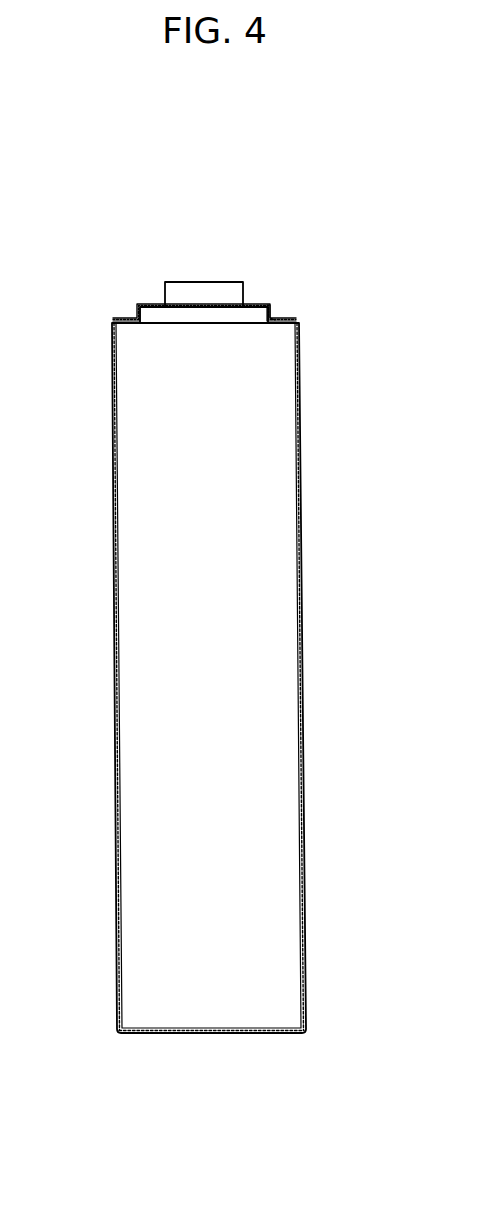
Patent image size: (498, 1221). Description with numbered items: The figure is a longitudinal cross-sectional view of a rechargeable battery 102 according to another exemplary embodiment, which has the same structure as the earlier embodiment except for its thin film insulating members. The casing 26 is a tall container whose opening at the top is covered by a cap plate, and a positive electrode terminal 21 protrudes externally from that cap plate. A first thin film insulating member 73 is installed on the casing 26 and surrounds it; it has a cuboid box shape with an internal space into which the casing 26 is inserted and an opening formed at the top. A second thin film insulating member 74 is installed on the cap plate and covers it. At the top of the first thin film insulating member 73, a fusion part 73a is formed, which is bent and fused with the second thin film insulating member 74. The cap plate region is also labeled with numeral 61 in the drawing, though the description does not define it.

The rechargeable battery 102 is at (222, 184).
The positive electrode terminal 21 is at (202, 292).
The cap plate 61 is at (158, 318).
The first thin film insulating member 73 is at (297, 462).
The fusion part 73a is at (287, 313).
The second thin film insulating member 74 is at (274, 315).
The casing 26 is at (280, 588).